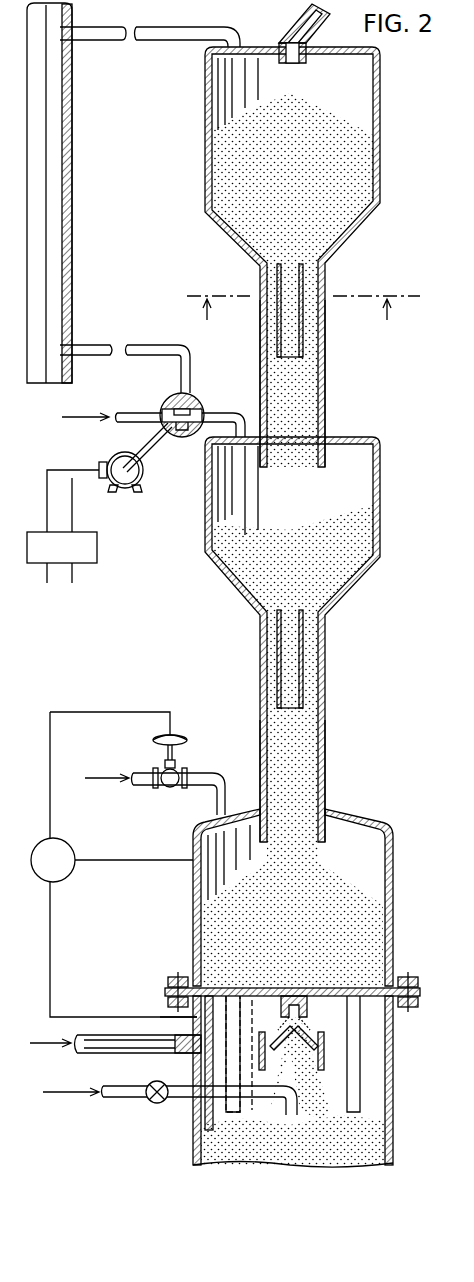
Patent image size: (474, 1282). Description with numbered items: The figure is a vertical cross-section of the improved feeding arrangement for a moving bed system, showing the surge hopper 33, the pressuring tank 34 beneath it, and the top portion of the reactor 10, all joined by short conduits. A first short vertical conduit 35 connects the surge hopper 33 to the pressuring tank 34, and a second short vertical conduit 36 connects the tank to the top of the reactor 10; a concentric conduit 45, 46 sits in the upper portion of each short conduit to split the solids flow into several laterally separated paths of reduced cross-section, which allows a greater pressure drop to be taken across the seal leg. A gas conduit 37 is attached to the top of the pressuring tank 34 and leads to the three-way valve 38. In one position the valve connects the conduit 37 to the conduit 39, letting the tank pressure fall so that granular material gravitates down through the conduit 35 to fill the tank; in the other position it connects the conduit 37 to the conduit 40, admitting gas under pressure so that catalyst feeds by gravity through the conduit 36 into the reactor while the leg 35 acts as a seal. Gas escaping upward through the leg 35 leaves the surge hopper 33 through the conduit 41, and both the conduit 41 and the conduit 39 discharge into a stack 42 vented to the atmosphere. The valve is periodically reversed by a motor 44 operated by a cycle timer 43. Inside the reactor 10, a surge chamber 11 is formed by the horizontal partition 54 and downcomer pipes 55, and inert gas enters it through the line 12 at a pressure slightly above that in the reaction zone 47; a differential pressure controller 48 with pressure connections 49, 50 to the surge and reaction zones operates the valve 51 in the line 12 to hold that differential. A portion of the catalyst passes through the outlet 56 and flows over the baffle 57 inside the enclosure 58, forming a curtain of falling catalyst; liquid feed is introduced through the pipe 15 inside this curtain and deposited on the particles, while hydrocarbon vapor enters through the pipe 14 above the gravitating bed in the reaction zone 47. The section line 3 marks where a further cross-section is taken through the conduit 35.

The section line 3- 3 is at (303, 321).
The reactor 10 is at (388, 1132).
The surge chamber 11 is at (395, 885).
The inert gas line 12 is at (222, 773).
The pipe 14 is at (84, 1057).
The pipe 15 is at (130, 1099).
The surge hopper 33 is at (380, 137).
The pressuring tank 34 is at (380, 527).
The first short vertical conduit 35 is at (314, 440).
The second short vertical conduit 36 is at (326, 735).
The gas conduit 37 is at (240, 410).
The three-way valve 38 is at (194, 406).
The conduit 39 is at (162, 346).
The conduit 40 is at (135, 412).
The conduit 41 is at (92, 41).
The stack 42 is at (68, 188).
The cycle timer 43 is at (97, 556).
The motor 44 is at (144, 473).
The concentric conduit 45 is at (303, 282).
The concentric conduit 46 is at (305, 680).
The reaction zone 47 is at (330, 1096).
The differential pressure controller 48 is at (70, 850).
The pressure connection 49 is at (142, 846).
The pressure connection 50 is at (168, 1017).
The valve 51 is at (172, 735).
The horizontal partition 54 is at (350, 988).
The downcomer pipes 55 is at (356, 1068).
The outlet 56 is at (308, 1010).
The baffle 57 is at (272, 1035).
The enclosure 58 is at (325, 1050).